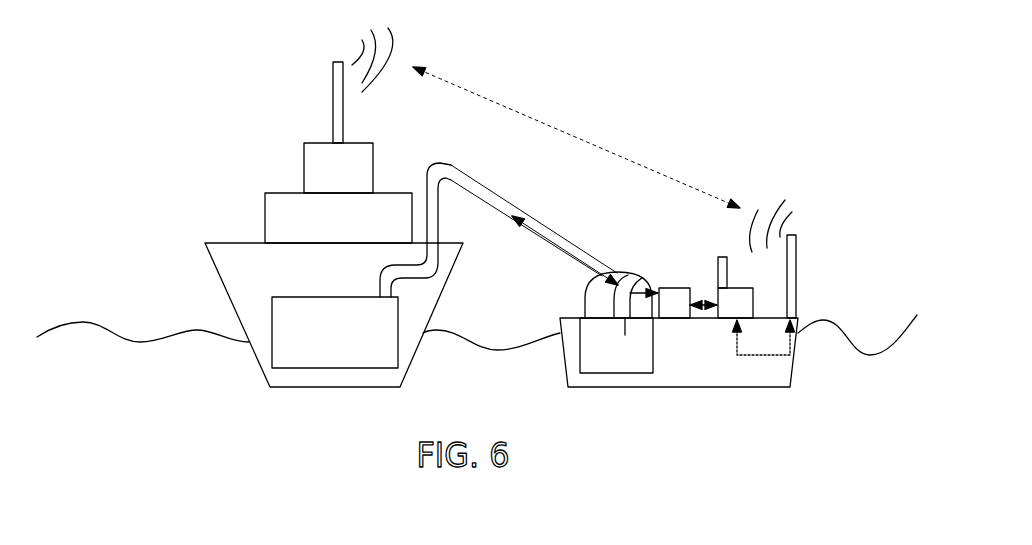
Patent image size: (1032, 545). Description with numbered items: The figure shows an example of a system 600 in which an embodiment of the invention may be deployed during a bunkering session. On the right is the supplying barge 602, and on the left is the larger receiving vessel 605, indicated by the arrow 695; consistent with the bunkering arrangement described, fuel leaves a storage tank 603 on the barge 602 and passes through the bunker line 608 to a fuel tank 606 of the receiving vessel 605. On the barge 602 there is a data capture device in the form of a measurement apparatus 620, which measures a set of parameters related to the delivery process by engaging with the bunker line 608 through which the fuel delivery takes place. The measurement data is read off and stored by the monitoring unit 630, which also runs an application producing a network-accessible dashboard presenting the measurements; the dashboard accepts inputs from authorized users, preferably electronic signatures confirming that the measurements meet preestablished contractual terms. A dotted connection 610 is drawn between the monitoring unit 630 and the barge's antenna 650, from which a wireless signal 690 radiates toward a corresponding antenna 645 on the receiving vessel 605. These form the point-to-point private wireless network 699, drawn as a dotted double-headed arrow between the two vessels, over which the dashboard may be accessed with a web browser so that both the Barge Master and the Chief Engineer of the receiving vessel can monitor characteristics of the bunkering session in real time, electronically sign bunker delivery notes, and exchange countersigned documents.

The system 600 is at (702, 125).
The surface support vessel 695 is at (218, 180).
The vessel superstructure 605 is at (322, 212).
The topside control unit 606 is at (335, 332).
The vessel communication antenna 645 is at (364, 85).
The bunker line 608 is at (499, 230).
The measurement apparatus 620 is at (621, 290).
The barge 602 is at (679, 352).
The power module 603 is at (616, 345).
The monitoring unit 630 is at (678, 322).
The sensor module 610 is at (738, 322).
The vehicle antenna 650 is at (810, 276).
The wireless signal 690 is at (728, 232).
The point-to-point private wireless network 699 is at (576, 137).